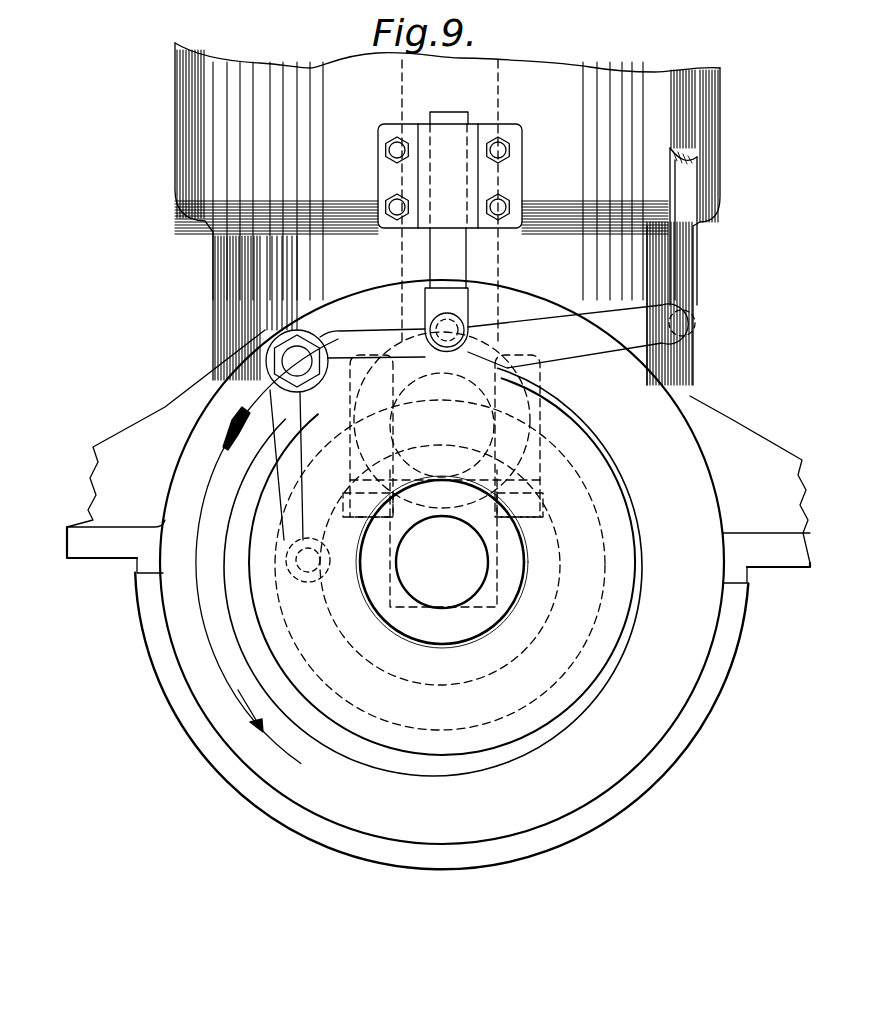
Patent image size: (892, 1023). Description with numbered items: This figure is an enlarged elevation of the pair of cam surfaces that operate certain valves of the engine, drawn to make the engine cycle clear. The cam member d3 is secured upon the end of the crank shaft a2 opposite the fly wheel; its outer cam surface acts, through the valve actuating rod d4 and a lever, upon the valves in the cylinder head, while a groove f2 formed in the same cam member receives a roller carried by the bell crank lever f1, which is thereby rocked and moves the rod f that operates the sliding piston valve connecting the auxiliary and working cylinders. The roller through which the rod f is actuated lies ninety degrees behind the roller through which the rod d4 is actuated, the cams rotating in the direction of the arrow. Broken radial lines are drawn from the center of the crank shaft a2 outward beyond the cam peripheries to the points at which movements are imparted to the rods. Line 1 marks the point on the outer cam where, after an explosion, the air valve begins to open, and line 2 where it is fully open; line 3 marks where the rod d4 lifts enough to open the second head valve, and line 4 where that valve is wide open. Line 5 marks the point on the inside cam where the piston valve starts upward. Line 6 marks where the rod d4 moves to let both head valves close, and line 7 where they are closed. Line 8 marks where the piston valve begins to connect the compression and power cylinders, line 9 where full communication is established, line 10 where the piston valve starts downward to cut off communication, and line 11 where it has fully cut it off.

The line 1 is at (442, 562).
The line 2 is at (442, 562).
The line 3 is at (442, 562).
The line 4 is at (442, 562).
The line 5 is at (442, 562).
The line 6 is at (442, 562).
The line 7 is at (442, 562).
The line 8 is at (442, 562).
The line 9 is at (442, 562).
The line 10 is at (442, 562).
The line 11 is at (442, 562).
The crank shaft a2 is at (442, 562).
The cam groove f2 is at (440, 565).
The cam d3 is at (620, 658).
The rod d4 is at (450, 232).
The rod f is at (690, 236).
The bell crank lever f1 is at (480, 443).